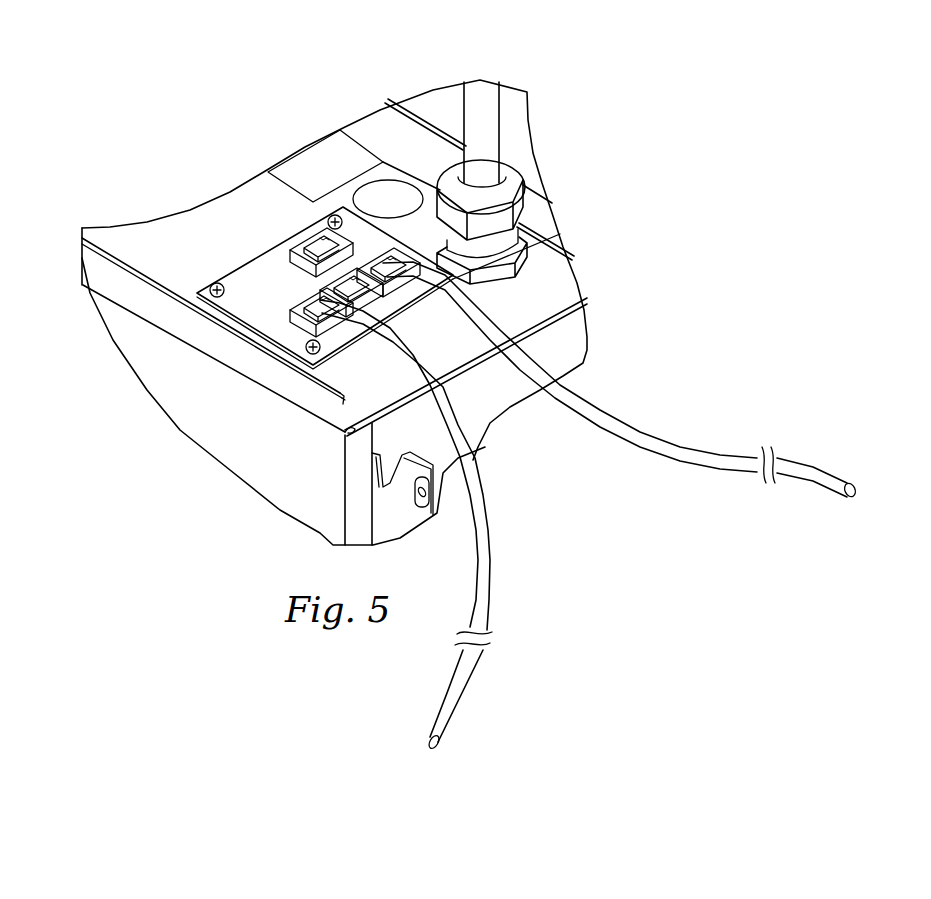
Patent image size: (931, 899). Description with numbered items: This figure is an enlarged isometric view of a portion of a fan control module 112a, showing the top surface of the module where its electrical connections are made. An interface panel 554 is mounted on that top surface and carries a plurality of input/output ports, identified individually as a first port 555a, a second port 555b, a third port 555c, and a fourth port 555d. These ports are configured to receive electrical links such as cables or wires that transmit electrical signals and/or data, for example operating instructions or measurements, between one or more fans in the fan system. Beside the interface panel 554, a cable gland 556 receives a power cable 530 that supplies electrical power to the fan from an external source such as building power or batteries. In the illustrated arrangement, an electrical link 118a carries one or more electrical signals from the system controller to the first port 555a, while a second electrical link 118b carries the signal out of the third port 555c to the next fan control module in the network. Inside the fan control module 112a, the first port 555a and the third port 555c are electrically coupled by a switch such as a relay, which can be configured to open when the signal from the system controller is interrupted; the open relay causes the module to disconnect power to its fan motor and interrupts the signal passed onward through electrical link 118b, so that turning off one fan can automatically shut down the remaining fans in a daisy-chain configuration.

The fan control module 112a is at (173, 131).
The interface panel 554 is at (243, 280).
The first port 555a is at (380, 253).
The second port 555b is at (330, 287).
The third port 555c is at (300, 305).
The fourth port 555d is at (322, 232).
The power cable 530 is at (500, 130).
The cable gland 556 is at (520, 207).
The electrical link 118a is at (677, 447).
The electrical link 118b is at (492, 587).